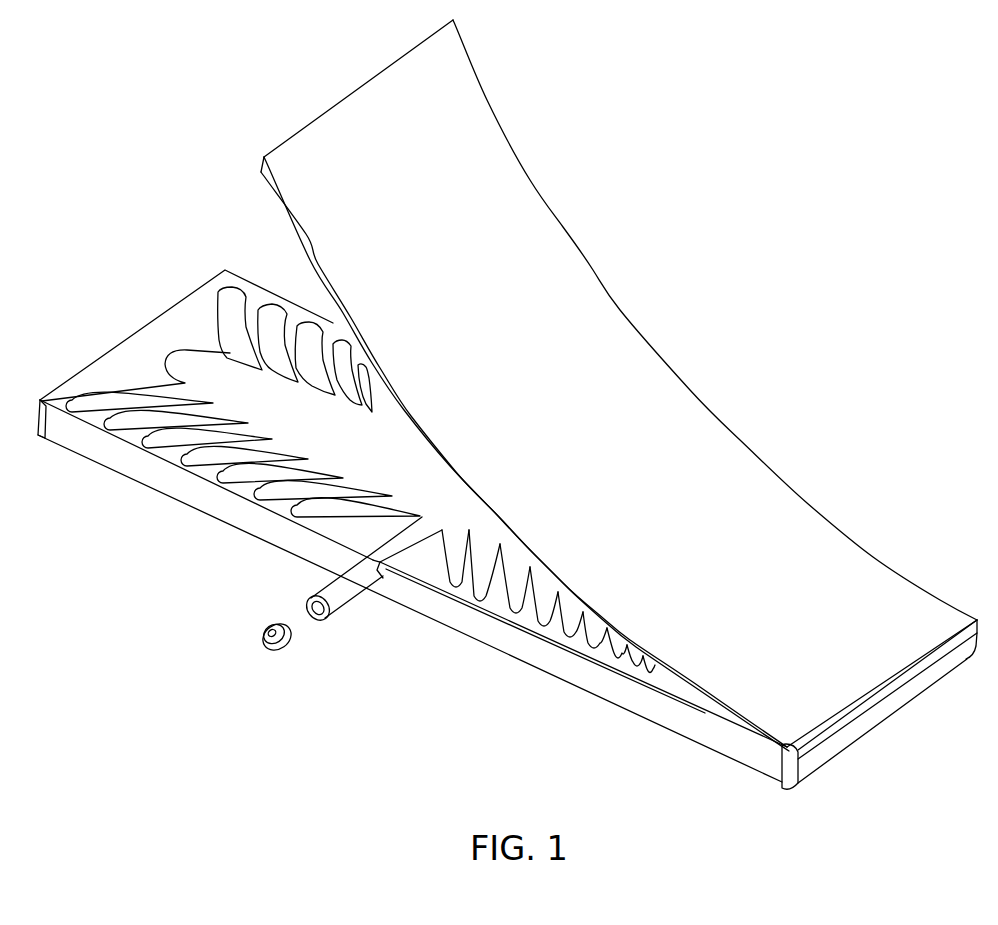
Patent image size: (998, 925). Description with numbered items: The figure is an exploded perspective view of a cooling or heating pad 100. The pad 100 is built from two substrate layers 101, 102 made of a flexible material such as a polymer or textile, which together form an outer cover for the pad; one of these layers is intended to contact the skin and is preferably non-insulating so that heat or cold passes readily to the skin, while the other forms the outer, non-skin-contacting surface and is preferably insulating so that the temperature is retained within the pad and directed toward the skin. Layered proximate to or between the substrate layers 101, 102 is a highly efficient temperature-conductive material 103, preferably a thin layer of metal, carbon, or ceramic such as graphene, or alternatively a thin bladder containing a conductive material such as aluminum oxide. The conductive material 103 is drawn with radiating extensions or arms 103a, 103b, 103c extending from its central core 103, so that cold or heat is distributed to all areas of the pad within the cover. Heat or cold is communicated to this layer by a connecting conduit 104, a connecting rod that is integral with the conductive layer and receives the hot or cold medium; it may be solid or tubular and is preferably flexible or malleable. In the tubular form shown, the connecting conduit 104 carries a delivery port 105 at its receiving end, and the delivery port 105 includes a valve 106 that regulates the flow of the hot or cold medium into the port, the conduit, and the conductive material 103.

The cooling or heating pad 100 is at (754, 231).
The substrate layer 101 is at (171, 487).
The substrate layer 102 is at (487, 143).
The temperature-conductive material 103 is at (272, 405).
The radiating extension 103a is at (236, 315).
The radiating extension 103b is at (177, 372).
The radiating extension 103c is at (92, 408).
The connecting conduit 104 is at (408, 531).
The delivery port 105 is at (348, 602).
The valve 106 is at (263, 634).